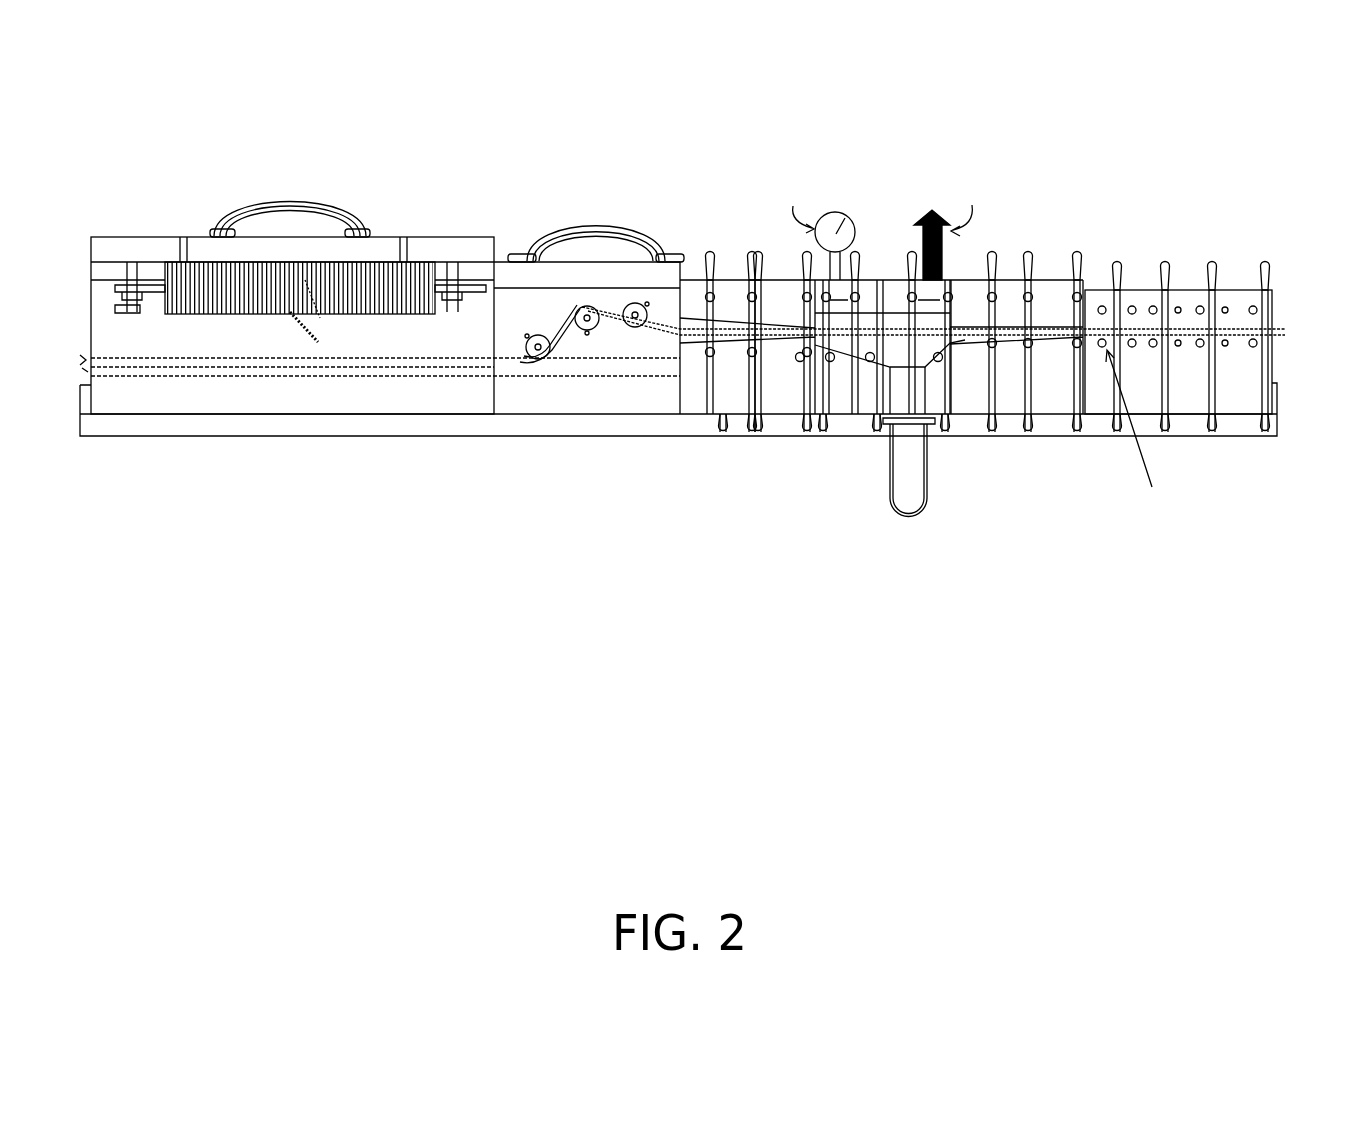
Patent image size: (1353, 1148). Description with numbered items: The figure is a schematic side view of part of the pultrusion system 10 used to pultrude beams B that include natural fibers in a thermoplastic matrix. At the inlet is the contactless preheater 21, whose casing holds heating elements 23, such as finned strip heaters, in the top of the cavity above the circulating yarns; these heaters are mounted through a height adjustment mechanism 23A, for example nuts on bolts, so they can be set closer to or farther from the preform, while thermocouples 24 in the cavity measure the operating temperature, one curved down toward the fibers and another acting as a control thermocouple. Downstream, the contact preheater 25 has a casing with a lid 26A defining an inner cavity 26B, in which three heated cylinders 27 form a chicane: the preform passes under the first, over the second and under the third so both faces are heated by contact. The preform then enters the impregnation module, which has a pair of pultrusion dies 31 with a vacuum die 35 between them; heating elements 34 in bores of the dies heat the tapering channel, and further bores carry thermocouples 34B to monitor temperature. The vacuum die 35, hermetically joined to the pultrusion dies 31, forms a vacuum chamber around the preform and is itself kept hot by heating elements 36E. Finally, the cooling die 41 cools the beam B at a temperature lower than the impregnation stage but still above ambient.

The pultrusion system 10 is at (288, 632).
The contactless preheater 21 is at (477, 160).
The heating elements 23 is at (315, 300).
The height adjustment mechanism 23A is at (455, 258).
The thermocouples 24 is at (436, 462).
The contact preheater 25 is at (668, 160).
The lid 26A is at (616, 278).
The inner cavity 26B is at (538, 344).
The heated cylinders 27 is at (642, 330).
The pultrusion dies 31 is at (1080, 160).
The heating elements 34 is at (810, 290).
The thermocouples 34B is at (723, 450).
The vacuum die 35 is at (847, 537).
The heating elements 36E is at (915, 294).
The cooling die 41 is at (1258, 160).
The beams B is at (1284, 330).